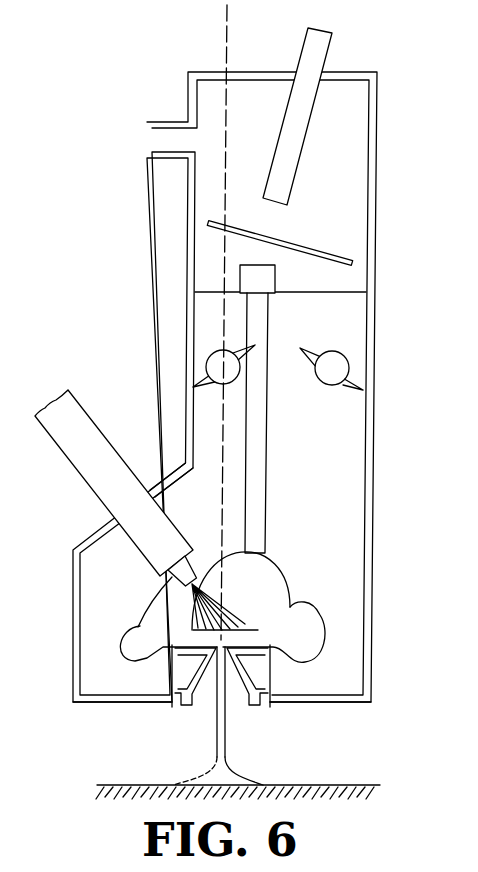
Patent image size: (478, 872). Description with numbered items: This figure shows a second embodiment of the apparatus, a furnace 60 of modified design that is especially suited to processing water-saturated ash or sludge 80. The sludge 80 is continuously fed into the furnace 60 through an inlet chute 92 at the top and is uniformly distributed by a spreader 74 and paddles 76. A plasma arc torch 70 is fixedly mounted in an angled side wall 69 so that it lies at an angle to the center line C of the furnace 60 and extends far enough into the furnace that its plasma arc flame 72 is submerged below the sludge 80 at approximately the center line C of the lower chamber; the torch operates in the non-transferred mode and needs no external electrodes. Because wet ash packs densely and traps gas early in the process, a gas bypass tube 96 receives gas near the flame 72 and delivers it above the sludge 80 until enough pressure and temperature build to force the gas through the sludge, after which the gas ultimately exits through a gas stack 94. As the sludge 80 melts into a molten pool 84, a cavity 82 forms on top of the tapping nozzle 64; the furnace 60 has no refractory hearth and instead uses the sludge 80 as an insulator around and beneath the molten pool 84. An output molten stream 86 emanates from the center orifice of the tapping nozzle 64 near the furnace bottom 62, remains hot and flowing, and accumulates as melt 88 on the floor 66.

The furnace 60 is at (372, 572).
The bottom wall 62 is at (317, 707).
The tapping nozzle 64 is at (257, 680).
The floor 66 is at (134, 785).
The angled side wall 69 is at (168, 462).
The plasma arc torch 70 is at (68, 390).
The plasma arc flame 72 is at (212, 572).
The spreader 74 is at (305, 247).
The paddles 76 is at (208, 355).
The sludge 80 is at (336, 533).
The cavity 82 is at (266, 606).
The molten pool 84 is at (148, 626).
The molten stream 86 is at (217, 737).
The melt 88 is at (250, 757).
The inlet chute 92 is at (332, 46).
The gas stack 94 is at (163, 122).
The gas bypass tube 96 is at (268, 436).
The center line C is at (227, 26).